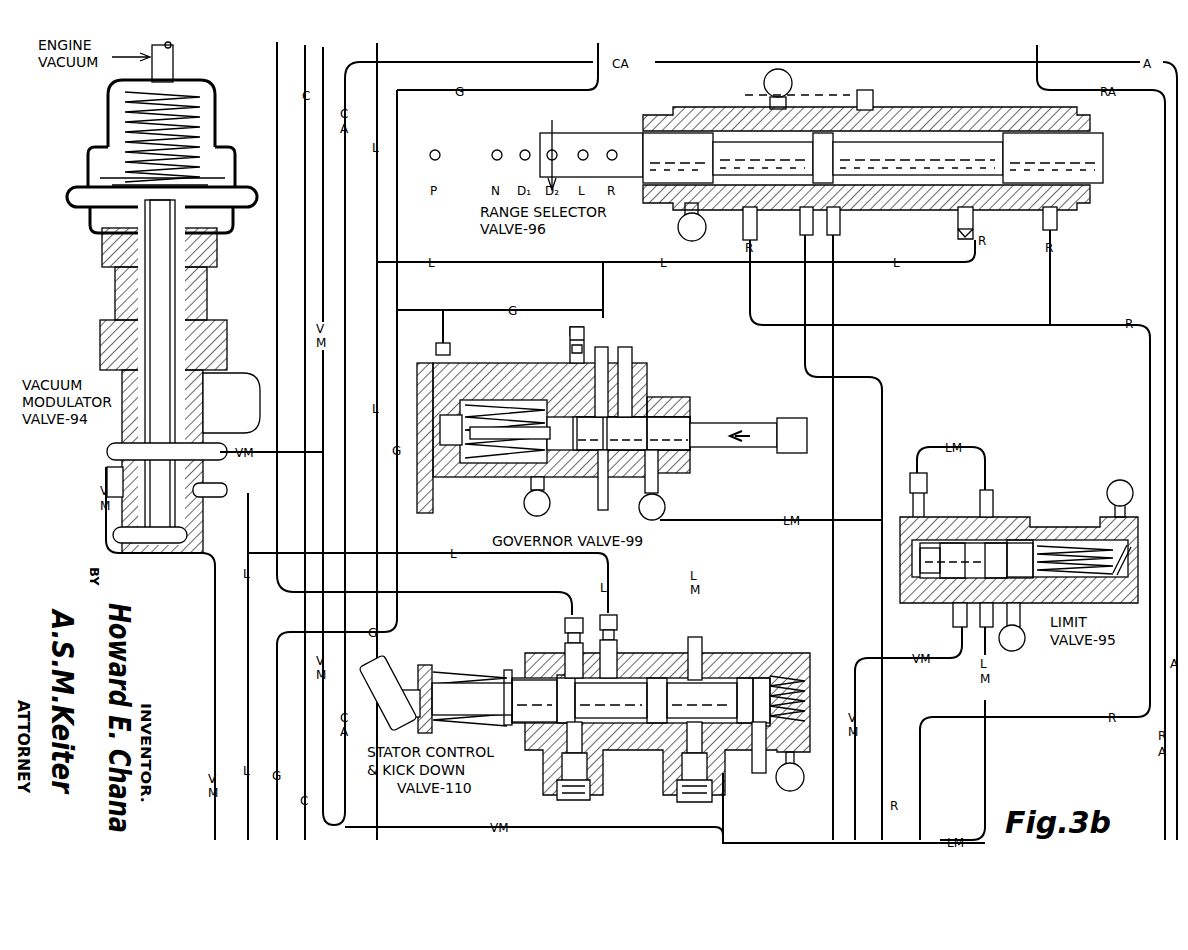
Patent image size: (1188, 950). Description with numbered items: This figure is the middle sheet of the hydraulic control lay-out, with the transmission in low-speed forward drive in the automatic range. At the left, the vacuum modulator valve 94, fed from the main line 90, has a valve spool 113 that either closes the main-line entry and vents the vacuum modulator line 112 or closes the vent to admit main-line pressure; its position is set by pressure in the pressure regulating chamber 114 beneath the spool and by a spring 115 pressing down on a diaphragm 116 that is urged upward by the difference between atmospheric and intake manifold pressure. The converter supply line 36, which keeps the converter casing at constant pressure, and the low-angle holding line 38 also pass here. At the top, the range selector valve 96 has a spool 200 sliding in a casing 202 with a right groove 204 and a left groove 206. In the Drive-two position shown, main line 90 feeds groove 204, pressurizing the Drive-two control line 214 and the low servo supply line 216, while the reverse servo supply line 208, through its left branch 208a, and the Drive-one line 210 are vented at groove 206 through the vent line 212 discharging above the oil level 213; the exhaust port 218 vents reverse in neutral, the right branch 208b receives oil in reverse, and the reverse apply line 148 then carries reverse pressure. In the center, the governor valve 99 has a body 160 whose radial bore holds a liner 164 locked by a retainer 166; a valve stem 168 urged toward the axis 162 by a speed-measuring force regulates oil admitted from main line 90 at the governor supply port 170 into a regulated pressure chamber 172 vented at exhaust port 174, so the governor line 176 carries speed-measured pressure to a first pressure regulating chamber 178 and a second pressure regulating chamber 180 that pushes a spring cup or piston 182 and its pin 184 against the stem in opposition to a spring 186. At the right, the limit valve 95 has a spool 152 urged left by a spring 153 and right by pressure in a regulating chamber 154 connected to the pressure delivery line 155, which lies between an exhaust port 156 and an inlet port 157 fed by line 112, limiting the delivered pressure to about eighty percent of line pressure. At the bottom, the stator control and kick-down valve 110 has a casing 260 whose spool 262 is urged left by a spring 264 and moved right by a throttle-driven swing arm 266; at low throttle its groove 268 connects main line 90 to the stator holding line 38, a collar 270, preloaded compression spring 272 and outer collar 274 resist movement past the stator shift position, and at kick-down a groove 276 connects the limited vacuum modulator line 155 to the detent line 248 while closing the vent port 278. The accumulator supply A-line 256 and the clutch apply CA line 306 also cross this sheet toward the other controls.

The vacuum modulator valve 94 is at (170, 300).
The spring 115 is at (205, 105).
The diaphragm 116 is at (222, 178).
The valve spool 113 is at (212, 490).
The pressure regulating chamber 114 is at (190, 542).
The vacuum modulator line 112 is at (323, 68).
The low-angle stator holding line 38 is at (277, 58).
The converter supply line 36 is at (307, 52).
The main line 90 is at (377, 45).
The governor line 176 is at (590, 100).
The clutch apply line 306 is at (648, 62).
The accumulator supply line 256 is at (715, 60).
The reverse apply line 148 is at (1090, 100).
The range selector valve 96 is at (788, 155).
The right groove 204 is at (945, 135).
The valve spool 200 is at (1093, 181).
The casing 202 is at (1065, 214).
The left groove 206 is at (734, 223).
The reverse servo supply line 208 is at (1150, 358).
The left hand branch of reverse servo supply line 208a is at (750, 286).
The right hand branch of reverse supply line 208b is at (1060, 273).
The Drive-1 line 210 is at (800, 227).
The vent line 212 is at (794, 82).
The oil level 213 is at (747, 83).
The Drive-2 control line 214 is at (844, 226).
The low servo supply line 216 is at (872, 94).
The exhaust port 218 is at (678, 230).
The governor valve 99 is at (612, 425).
The governor body 160 is at (510, 496).
The axis 162 is at (425, 520).
The liner 164 is at (675, 396).
The retainer 166 is at (641, 372).
The valve stem 168 is at (768, 420).
The governor supply port 170 is at (603, 489).
The regulated pressure chamber 172 is at (624, 477).
The exhaust port 174 is at (666, 501).
The first pressure regulating chamber 178 is at (596, 477).
The second pressure regulating chamber 180 is at (443, 472).
The spring cup or piston 182 is at (453, 360).
The pin 184 is at (503, 465).
The spring 186 is at (518, 400).
The stator control and kick-down valve 110 is at (593, 710).
The casing 260 is at (618, 654).
The valve spool 262 is at (535, 675).
The spring 264 is at (790, 680).
The swing arm 266 is at (376, 691).
The groove 268 is at (640, 750).
The collar 270 is at (503, 672).
The preloaded compression spring 272 is at (446, 668).
The outer collar 274 is at (420, 667).
The groove 276 is at (703, 655).
The vent port 278 is at (787, 803).
The detent or kick-down line 248 is at (720, 840).
The limit valve 95 is at (1009, 570).
The spool 152 is at (1018, 540).
The spring 153 is at (1073, 540).
The pressure regulating chamber 154 is at (903, 600).
The pressure delivery line 155 is at (985, 457).
The exhaust port 156 is at (1015, 648).
The inlet port 157 is at (953, 610).